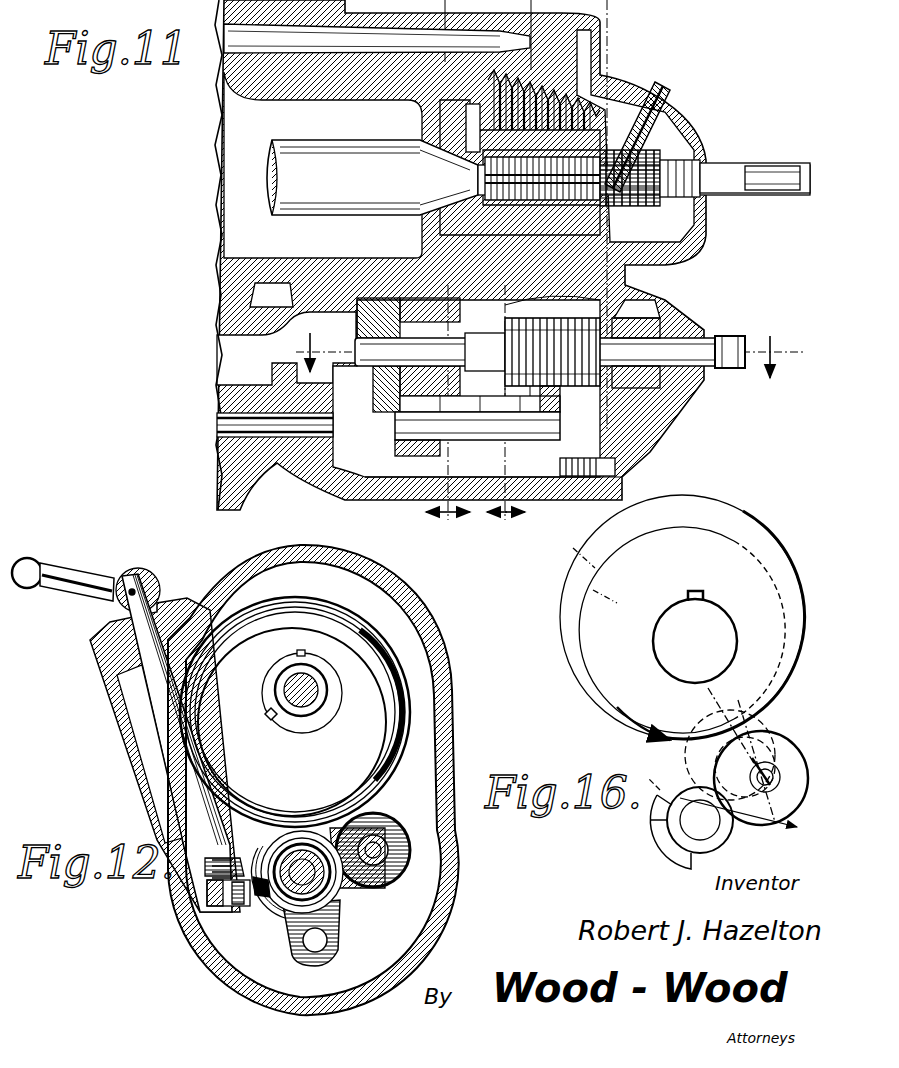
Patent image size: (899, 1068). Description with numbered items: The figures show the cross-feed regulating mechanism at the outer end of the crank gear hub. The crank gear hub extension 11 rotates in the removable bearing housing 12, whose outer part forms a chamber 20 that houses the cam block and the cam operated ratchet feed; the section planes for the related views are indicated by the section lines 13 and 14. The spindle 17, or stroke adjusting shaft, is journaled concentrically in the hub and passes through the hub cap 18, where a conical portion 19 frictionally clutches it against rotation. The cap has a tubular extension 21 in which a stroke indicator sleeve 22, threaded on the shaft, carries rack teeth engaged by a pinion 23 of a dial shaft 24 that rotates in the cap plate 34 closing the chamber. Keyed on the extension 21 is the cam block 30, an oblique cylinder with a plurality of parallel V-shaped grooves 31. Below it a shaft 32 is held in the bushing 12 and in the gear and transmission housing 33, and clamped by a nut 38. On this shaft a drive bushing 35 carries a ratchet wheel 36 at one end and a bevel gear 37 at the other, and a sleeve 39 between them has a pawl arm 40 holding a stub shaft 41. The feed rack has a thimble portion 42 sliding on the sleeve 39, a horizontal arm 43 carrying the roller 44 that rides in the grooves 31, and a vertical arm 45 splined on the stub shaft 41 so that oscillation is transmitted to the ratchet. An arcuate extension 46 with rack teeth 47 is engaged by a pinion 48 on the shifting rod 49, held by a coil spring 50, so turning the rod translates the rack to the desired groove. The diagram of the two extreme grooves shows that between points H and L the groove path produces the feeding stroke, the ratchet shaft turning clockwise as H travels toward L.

In FIG. 11, the crank gear hub extension 11 is at (330, 86).
In FIG. 11, the bearing housing 12 is at (318, 262).
In FIG. 11, the section line 13- 13 is at (550, 346).
In FIG. 11, the section line 14- 14 is at (448, 421).
In FIG. 11, the spindle 17 is at (282, 215).
In FIG. 11, the hub cap 18 is at (490, 82).
In FIG. 11, the conical portion 19 is at (420, 205).
In FIG. 12, the conical portion 19 is at (312, 685).
In FIG. 11, the chamber 20 is at (388, 490).
In FIG. 12, the chamber 20 is at (432, 735).
In FIG. 11, the tubular extension 21 is at (580, 106).
In FIG. 12, the tubular extension 21 is at (306, 730).
In FIG. 11, the stroke indicator sleeve 22 is at (648, 196).
In FIG. 11, the pinion 23 is at (664, 160).
In FIG. 11, the dial shaft 24 is at (672, 98).
In FIG. 11, the cam block 30 is at (545, 308).
In FIG. 12, the cam block 30 is at (300, 640).
In FIG. 16, the cam block 30 is at (740, 532).
In FIG. 11, the V-shaped grooves 31 is at (534, 100).
In FIG. 12, the V-shaped grooves 31 is at (380, 668).
In FIG. 16, the V-shaped grooves 31 is at (715, 527).
In FIG. 12, the shaft 32 is at (305, 850).
In FIG. 11, the gear and transmission housing 33 is at (652, 286).
In FIG. 11, the cap plate 34 is at (615, 465).
In FIG. 11, the drive bushing 35 is at (460, 324).
In FIG. 12, the drive bushing 35 is at (272, 835).
In FIG. 11, the ratchet wheel 36 is at (380, 398).
In FIG. 11, the bevel gear 37 is at (638, 370).
In FIG. 11, the nut 38 is at (735, 368).
In FIG. 11, the sleeve 39 is at (480, 399).
In FIG. 12, the sleeve 39 is at (330, 835).
In FIG. 11, the pawl arm 40 is at (417, 455).
In FIG. 11, the stub shaft 41 is at (498, 440).
In FIG. 11, the thimble portion 42 is at (552, 344).
In FIG. 12, the thimble portion 42 is at (338, 897).
In FIG. 12, the horizontal arm 43 is at (378, 812).
In FIG. 16, the horizontal arm 43 is at (770, 822).
In FIG. 11, the roller 44 is at (619, 215).
In FIG. 12, the roller 44 is at (380, 838).
In FIG. 16, the roller 44 is at (778, 745).
In FIG. 11, the vertical arm 45 is at (548, 404).
In FIG. 12, the vertical arm 45 is at (292, 910).
In FIG. 16, the vertical arm 45 is at (670, 858).
In FIG. 12, the arcuate extension 46 is at (246, 906).
In FIG. 11, the rack teeth 47 is at (510, 395).
In FIG. 12, the rack teeth 47 is at (260, 900).
In FIG. 12, the pinion 48 is at (212, 910).
In FIG. 12, the shifting rod 49 is at (200, 804).
In FIG. 12, the coil spring 50 is at (212, 870).
In FIG. 16, the point H is at (588, 570).
In FIG. 16, the point L is at (730, 744).